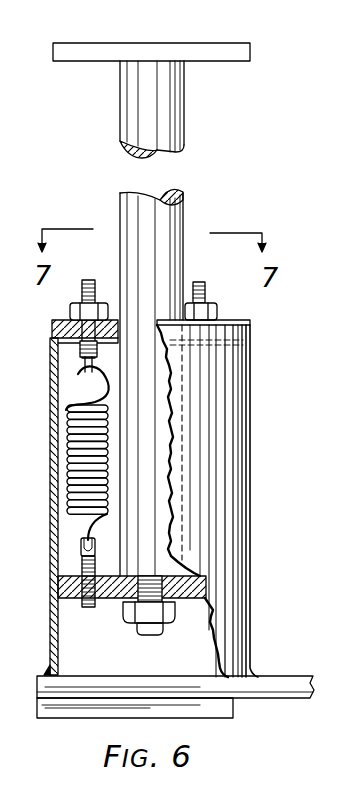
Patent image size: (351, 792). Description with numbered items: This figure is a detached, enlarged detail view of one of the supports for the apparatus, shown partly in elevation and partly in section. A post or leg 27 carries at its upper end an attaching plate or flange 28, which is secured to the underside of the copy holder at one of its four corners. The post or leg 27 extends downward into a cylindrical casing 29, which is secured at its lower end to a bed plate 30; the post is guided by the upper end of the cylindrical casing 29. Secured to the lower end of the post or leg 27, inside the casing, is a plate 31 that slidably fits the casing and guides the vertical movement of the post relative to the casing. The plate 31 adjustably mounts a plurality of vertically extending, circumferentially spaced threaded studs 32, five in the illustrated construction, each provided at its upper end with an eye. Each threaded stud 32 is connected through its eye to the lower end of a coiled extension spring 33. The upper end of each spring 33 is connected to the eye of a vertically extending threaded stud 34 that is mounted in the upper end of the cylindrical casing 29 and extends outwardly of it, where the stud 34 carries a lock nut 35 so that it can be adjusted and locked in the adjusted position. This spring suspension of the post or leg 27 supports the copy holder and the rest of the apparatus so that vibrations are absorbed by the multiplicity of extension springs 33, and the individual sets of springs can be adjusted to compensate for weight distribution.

The post or leg 27 is at (182, 137).
The attaching plate or flange 28 is at (222, 50).
The cylindrical casing 29 is at (232, 441).
The bed plate 30 is at (284, 677).
The plate 31 is at (108, 601).
The threaded stud 32 is at (80, 556).
The coiled extension spring 33 is at (82, 458).
The threaded stud 34 is at (98, 282).
The lock nut 35 is at (226, 291).